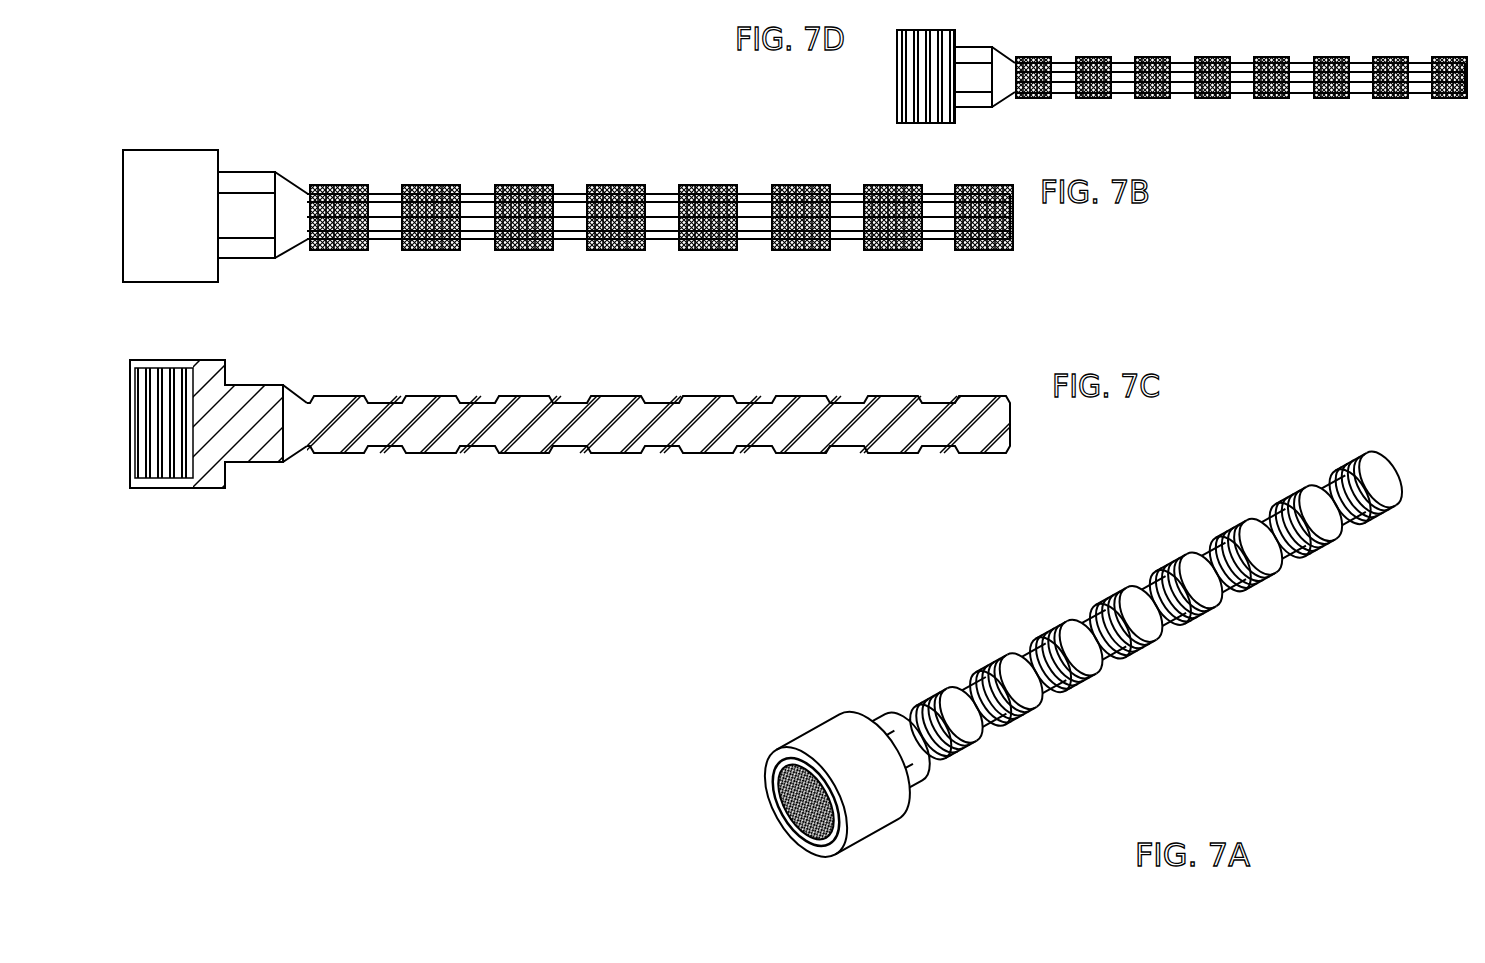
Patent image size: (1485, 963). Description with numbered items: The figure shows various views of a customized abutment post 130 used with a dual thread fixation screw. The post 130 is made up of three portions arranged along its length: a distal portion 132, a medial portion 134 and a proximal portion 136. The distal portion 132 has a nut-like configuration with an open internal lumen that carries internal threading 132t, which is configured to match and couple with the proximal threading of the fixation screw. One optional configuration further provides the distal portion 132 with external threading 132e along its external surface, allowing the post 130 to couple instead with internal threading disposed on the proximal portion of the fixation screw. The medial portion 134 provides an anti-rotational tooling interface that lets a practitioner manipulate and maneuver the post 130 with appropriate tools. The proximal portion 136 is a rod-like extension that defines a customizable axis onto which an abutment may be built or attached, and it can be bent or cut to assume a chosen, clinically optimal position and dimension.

In FIG. 7B, the post 130 is at (1060, 255).
In FIG. 7C, the post 130 is at (1005, 350).
In FIG. 7A, the post 130 is at (1005, 598).
In FIG. 7B, the distal portion 132 is at (198, 152).
In FIG. 7C, the distal portion 132 is at (241, 477).
In FIG. 7A, the distal portion 132 is at (837, 756).
In FIG. 7C, the internal threading 132t is at (130, 428).
In FIG. 7A, the internal threading 132t is at (823, 735).
In FIG. 7D, the external threading 132e is at (903, 50).
In FIG. 7B, the medial portion 134 is at (248, 267).
In FIG. 7C, the medial portion 134 is at (252, 398).
In FIG. 7A, the medial portion 134 is at (897, 720).
In FIG. 7B, the proximal portion 136 is at (655, 252).
In FIG. 7C, the proximal portion 136 is at (790, 396).
In FIG. 7A, the proximal portion 136 is at (1268, 577).